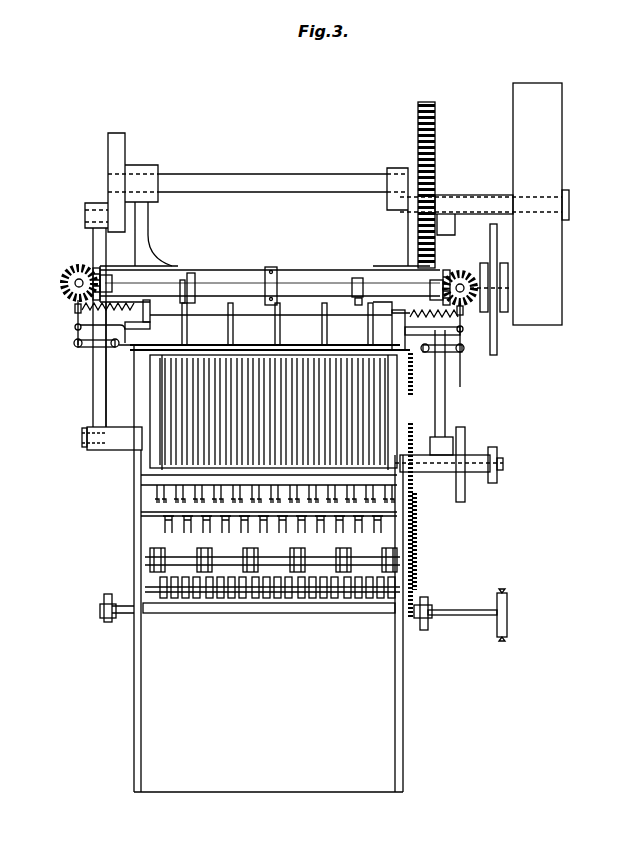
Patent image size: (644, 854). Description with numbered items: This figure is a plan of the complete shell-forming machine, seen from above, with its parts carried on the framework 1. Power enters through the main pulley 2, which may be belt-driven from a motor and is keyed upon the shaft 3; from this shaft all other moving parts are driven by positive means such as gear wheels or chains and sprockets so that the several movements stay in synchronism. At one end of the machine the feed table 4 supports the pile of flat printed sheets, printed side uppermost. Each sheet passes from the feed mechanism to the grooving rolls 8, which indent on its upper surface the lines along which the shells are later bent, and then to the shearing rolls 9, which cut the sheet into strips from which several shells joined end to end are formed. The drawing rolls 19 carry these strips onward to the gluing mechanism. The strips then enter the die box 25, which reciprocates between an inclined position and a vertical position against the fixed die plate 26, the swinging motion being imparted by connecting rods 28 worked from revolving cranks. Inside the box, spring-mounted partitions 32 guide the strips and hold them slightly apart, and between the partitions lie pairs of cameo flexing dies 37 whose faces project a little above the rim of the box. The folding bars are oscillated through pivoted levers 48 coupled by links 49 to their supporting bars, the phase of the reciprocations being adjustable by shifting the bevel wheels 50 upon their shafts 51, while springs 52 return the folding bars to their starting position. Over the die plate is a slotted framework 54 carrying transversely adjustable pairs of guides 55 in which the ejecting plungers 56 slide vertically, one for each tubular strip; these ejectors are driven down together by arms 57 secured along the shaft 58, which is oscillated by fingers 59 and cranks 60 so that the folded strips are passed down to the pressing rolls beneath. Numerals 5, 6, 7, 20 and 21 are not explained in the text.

The framework 1 is at (286, 270).
The main pulley 2 is at (541, 204).
The shaft 3 is at (477, 195).
The feed table 4 is at (268, 621).
The bottom bar 5 is at (195, 613).
The bearing bracket 6 is at (112, 622).
The shaft 7 is at (428, 605).
The grooving rolls 8 is at (257, 607).
The shearing rolls 9 is at (145, 567).
The drawing rolls 19 is at (412, 548).
The upper comb rail 20 is at (155, 497).
The lower comb rail 21 is at (150, 528).
The die box 25 is at (146, 382).
The die plate 26 is at (147, 352).
The connecting rods 28 is at (95, 400).
The partitions 32 is at (160, 413).
The cameo flexing dies 37 is at (410, 411).
The pivoted levers 48 is at (76, 335).
The links 49 is at (80, 350).
The bevel wheels 50 is at (62, 285).
The shafts 51 is at (88, 270).
The springs 52 is at (72, 310).
The slotted framework 54 is at (208, 352).
The guides 55 is at (165, 352).
The ejecting plungers 56 is at (270, 352).
The arms 57 is at (333, 332).
The shaft 58 is at (296, 306).
The fingers 59 is at (183, 280).
The cranks 60 is at (196, 280).